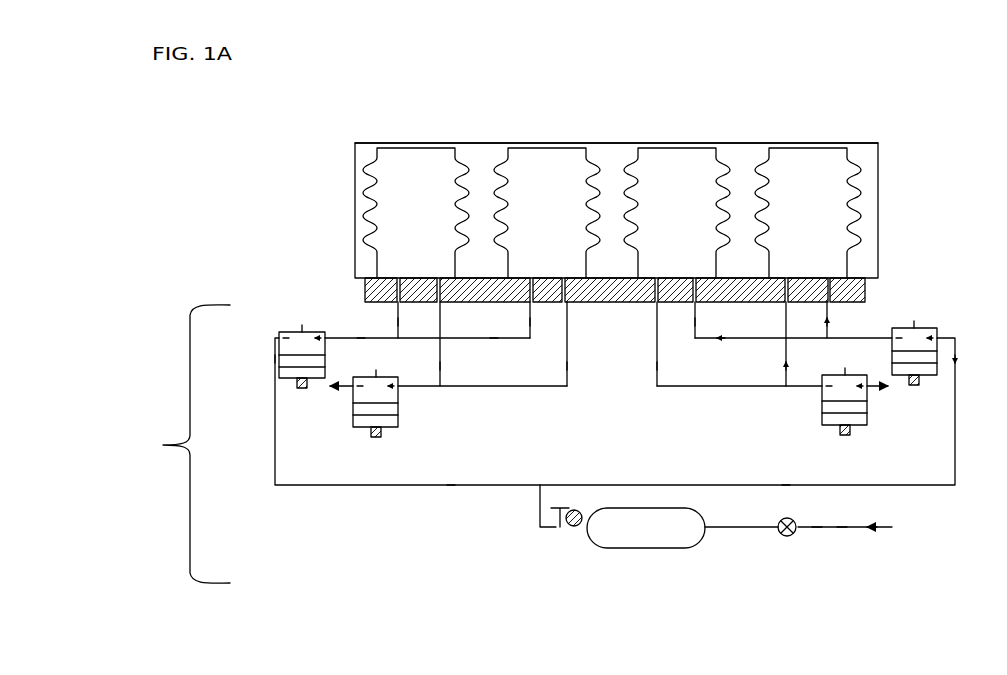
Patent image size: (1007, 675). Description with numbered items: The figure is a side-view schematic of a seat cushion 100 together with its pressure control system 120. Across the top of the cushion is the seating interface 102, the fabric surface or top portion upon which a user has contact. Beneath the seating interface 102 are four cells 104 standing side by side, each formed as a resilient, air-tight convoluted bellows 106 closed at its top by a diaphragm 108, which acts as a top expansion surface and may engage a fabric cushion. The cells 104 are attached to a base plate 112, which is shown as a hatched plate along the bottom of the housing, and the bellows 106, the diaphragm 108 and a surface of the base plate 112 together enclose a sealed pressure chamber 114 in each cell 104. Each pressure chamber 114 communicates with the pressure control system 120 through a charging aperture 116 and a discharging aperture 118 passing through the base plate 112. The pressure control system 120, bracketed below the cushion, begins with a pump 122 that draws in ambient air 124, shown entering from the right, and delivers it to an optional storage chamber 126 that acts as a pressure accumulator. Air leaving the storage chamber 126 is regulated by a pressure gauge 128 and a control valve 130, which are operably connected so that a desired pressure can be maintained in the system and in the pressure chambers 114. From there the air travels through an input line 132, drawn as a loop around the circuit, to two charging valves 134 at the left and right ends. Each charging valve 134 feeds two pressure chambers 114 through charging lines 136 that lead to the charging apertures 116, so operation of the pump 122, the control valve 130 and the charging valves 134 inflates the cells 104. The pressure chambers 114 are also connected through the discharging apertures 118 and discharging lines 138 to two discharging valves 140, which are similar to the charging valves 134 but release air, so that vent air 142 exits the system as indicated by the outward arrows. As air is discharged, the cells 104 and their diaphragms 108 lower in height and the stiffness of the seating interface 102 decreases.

The seat cushion 100 is at (466, 104).
The seating interface 102 is at (840, 143).
The cells 104 is at (367, 152).
The diaphragm 108 is at (525, 148).
The bellows 106 is at (373, 199).
The pressure chamber 114 is at (558, 215).
The base plate 112 is at (370, 293).
The charging apertures 116 is at (403, 268).
The discharging apertures 118 is at (432, 268).
The pressure control system 120 is at (163, 445).
The pump 122 is at (788, 538).
The ambient air 124 is at (925, 537).
The storage chamber 126 is at (636, 548).
The pressure gauge 128 is at (582, 523).
The control valve 130 is at (565, 505).
The input line 132 is at (397, 492).
The charging valves 134 is at (286, 334).
The charging lines 136 is at (470, 340).
The discharging lines 138 is at (482, 386).
The discharging valves 140 is at (398, 403).
The vent air 142 is at (348, 389).